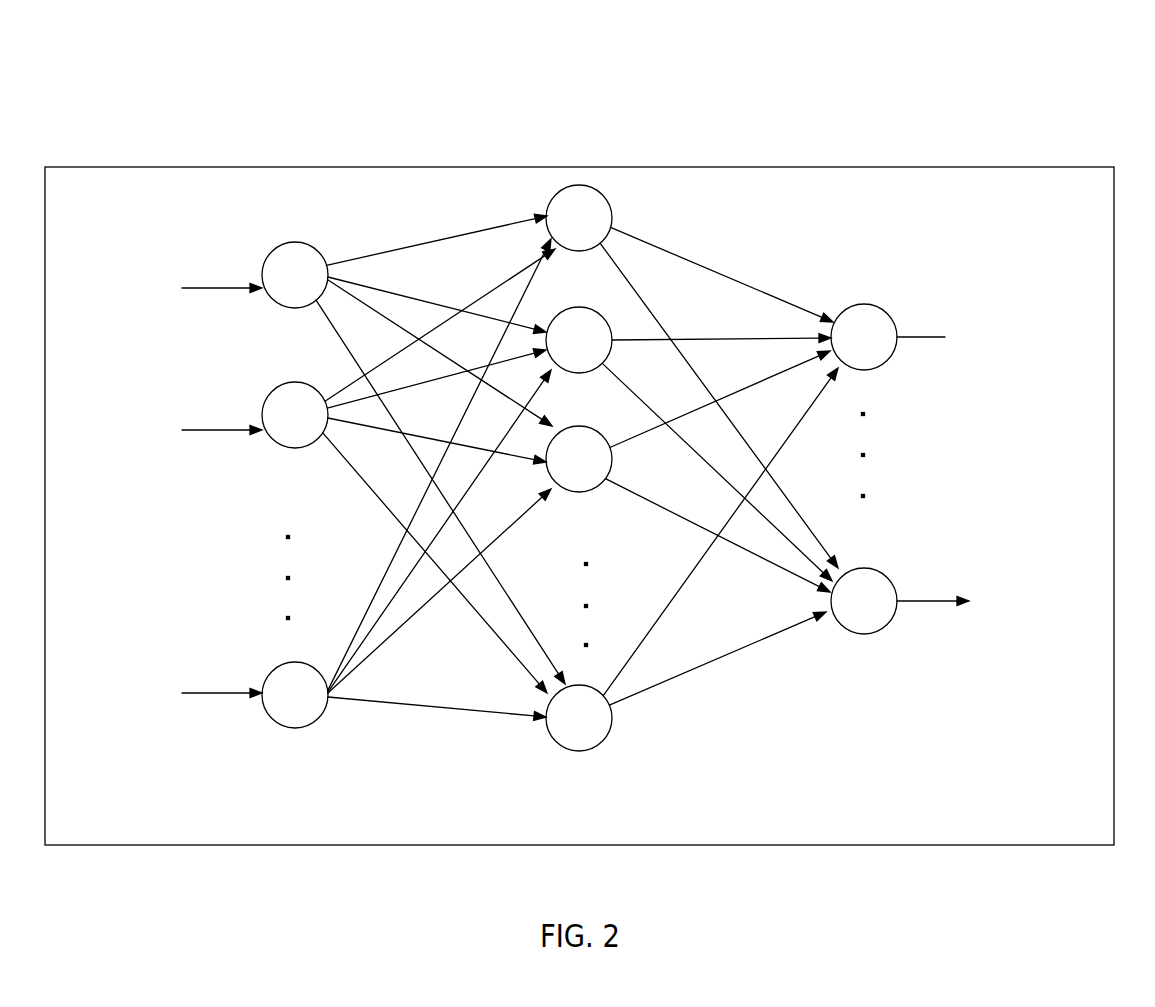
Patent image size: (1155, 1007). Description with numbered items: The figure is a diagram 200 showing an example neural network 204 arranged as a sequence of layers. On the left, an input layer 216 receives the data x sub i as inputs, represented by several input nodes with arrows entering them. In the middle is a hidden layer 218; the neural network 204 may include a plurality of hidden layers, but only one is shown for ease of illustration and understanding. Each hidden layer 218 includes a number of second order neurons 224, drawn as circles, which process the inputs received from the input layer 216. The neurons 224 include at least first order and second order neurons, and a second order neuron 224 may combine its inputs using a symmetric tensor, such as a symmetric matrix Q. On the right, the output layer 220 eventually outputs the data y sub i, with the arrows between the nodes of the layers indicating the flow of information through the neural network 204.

The diagram 200 is at (1036, 75).
The neural network 204 is at (187, 167).
The input layer 216 is at (249, 808).
The hidden layer 218 is at (538, 498).
The output layer 220 is at (854, 750).
The second order neuron 224 is at (610, 322).